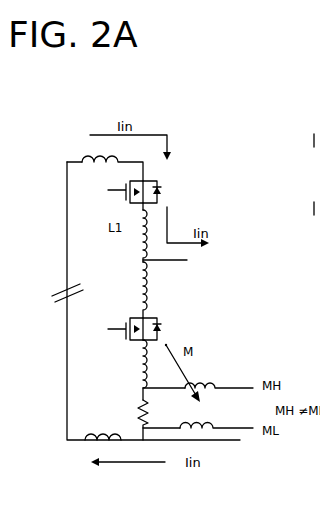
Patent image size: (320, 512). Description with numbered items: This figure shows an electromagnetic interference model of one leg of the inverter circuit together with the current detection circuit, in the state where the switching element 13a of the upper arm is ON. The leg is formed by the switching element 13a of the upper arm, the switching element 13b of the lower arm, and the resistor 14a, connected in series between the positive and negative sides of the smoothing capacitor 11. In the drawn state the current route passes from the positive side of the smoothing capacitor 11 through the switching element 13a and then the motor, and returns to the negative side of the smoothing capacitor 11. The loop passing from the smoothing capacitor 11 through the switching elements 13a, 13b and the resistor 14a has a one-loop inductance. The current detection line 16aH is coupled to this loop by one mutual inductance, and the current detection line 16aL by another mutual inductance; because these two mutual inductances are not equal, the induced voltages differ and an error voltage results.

The smoothing capacitor 11 is at (53, 285).
The switching element of the upper arm 13a is at (108, 190).
The switching element of the lower arm 13b is at (117, 312).
The resistor 14a is at (123, 408).
The current detection line 16aH is at (212, 372).
The current detection line 16aL is at (220, 437).